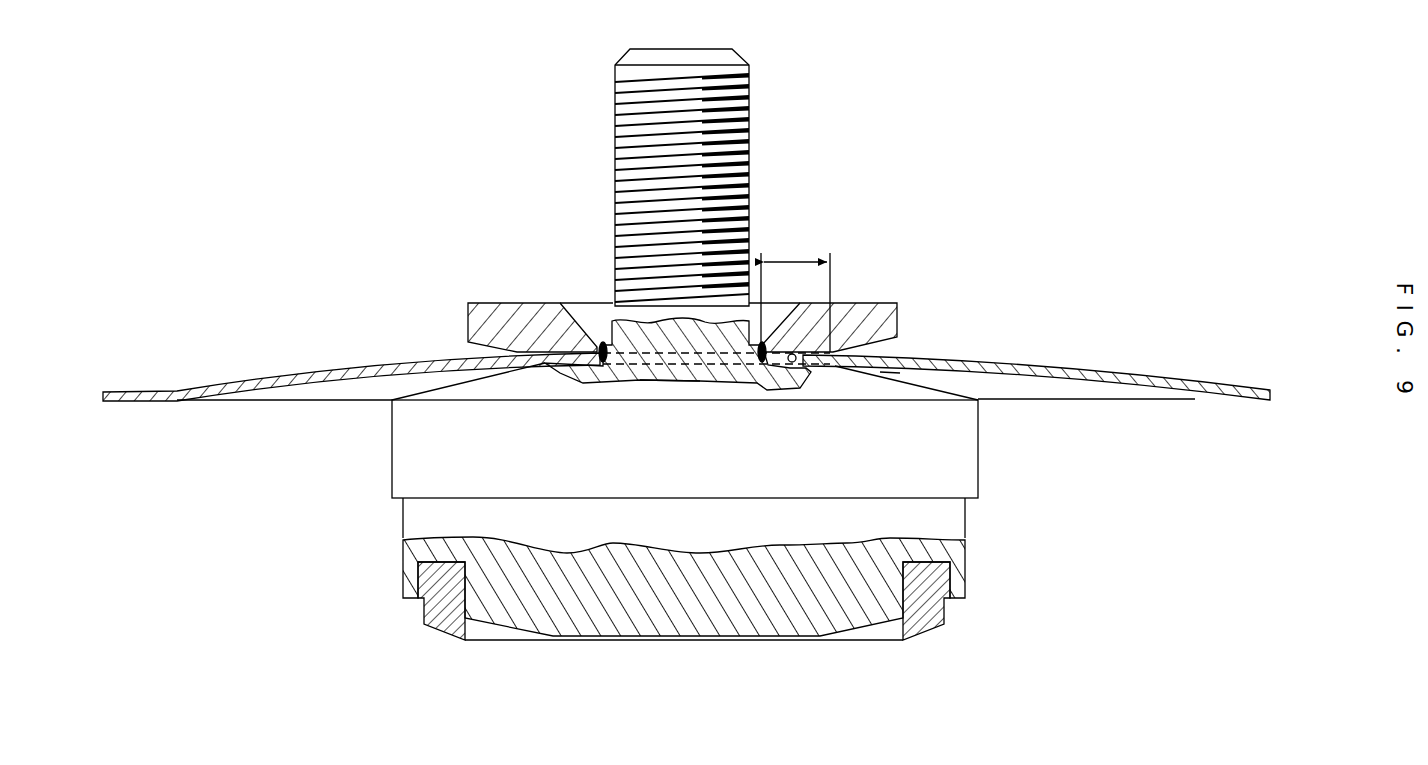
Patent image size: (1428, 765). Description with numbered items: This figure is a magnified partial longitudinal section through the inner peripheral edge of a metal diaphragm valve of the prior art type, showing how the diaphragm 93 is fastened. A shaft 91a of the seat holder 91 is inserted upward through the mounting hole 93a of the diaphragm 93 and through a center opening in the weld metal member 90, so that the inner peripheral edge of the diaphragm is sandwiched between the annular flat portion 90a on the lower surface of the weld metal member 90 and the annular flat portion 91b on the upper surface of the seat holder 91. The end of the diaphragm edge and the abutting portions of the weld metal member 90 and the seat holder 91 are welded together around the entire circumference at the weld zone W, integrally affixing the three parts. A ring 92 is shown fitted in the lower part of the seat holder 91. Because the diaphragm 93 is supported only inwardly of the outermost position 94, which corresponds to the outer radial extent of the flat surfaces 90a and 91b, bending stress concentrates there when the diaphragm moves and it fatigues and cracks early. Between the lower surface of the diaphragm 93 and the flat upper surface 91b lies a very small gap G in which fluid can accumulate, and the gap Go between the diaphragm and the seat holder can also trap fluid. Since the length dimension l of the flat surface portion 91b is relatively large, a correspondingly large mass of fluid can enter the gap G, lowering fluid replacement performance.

The weld metal member 90 is at (533, 320).
The annular flat portion 90a is at (797, 360).
The seat holder 91 is at (386, 472).
The shaft 91a is at (738, 148).
The annular flat portion 91b is at (806, 362).
The ring 92 is at (440, 602).
The diaphragm 93 is at (1040, 362).
The mounting hole 93a is at (672, 385).
The outermost position 94 is at (833, 362).
The weld zone W is at (756, 362).
The gap G is at (788, 361).
The gap Go is at (888, 372).
The length dimension l is at (795, 282).